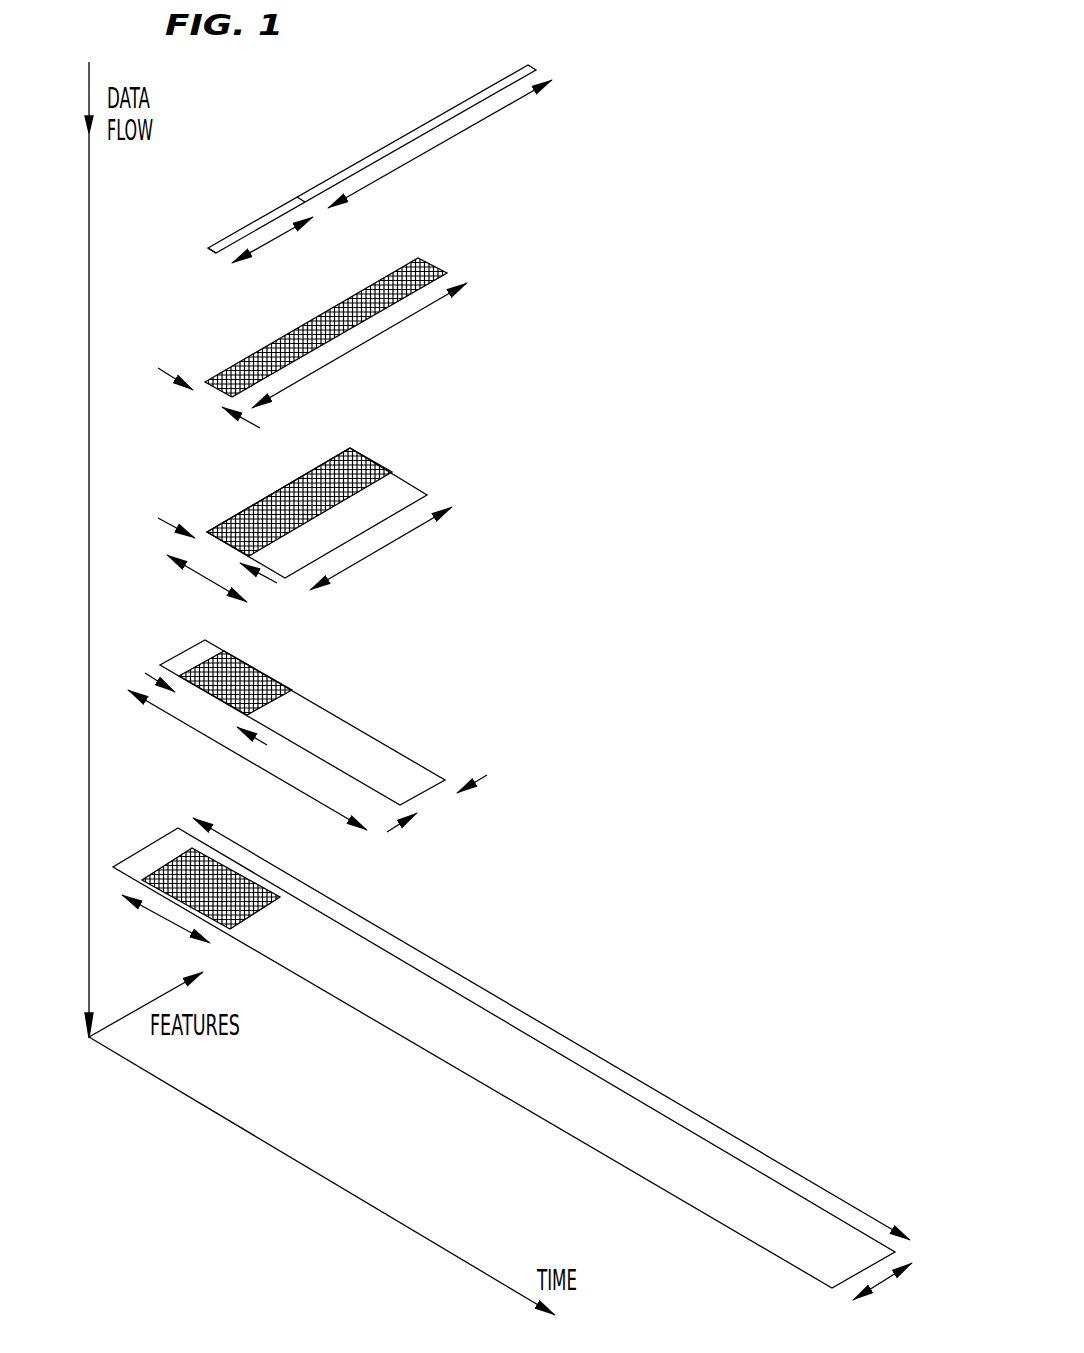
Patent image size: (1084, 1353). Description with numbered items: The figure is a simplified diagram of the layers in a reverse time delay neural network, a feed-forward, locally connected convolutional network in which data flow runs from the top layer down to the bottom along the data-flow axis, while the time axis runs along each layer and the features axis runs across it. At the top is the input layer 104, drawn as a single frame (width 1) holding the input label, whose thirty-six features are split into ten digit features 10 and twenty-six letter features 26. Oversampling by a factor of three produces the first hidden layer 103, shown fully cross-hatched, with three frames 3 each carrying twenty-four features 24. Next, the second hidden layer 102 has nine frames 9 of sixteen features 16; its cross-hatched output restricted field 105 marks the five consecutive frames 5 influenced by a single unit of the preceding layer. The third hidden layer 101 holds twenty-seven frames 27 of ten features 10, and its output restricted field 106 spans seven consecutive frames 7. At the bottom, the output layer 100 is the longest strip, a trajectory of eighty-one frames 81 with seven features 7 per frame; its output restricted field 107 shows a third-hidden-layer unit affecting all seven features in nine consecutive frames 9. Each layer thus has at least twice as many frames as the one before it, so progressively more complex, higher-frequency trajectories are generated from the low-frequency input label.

The output layer 100 is at (686, 1071).
The third hidden layer 101 is at (454, 743).
The second hidden layer 102 is at (519, 560).
The first hidden layer 103 is at (533, 378).
The input layer 104 is at (617, 169).
The output restricted field 105 is at (377, 470).
The output restricted field 106 is at (262, 672).
The output restricted field 107 is at (164, 863).
The frame count of input layer 1 is at (201, 262).
The frame count of first hidden layer 3 is at (209, 398).
The frame count of output restricted field in second hidden layer 5 is at (217, 550).
The feature count per output frame 7 is at (528, 992).
The frame count of second hidden layer 9 is at (184, 756).
The feature count per frame of third hidden layer 10 is at (359, 524).
The feature count per frame of second hidden layer 16 is at (381, 548).
The feature count per frame of first hidden layer 24 is at (359, 345).
The letter feature count of input layer 26 is at (440, 144).
The frame count of third hidden layer 27 is at (247, 760).
The frame count of output layer 81 is at (551, 1029).